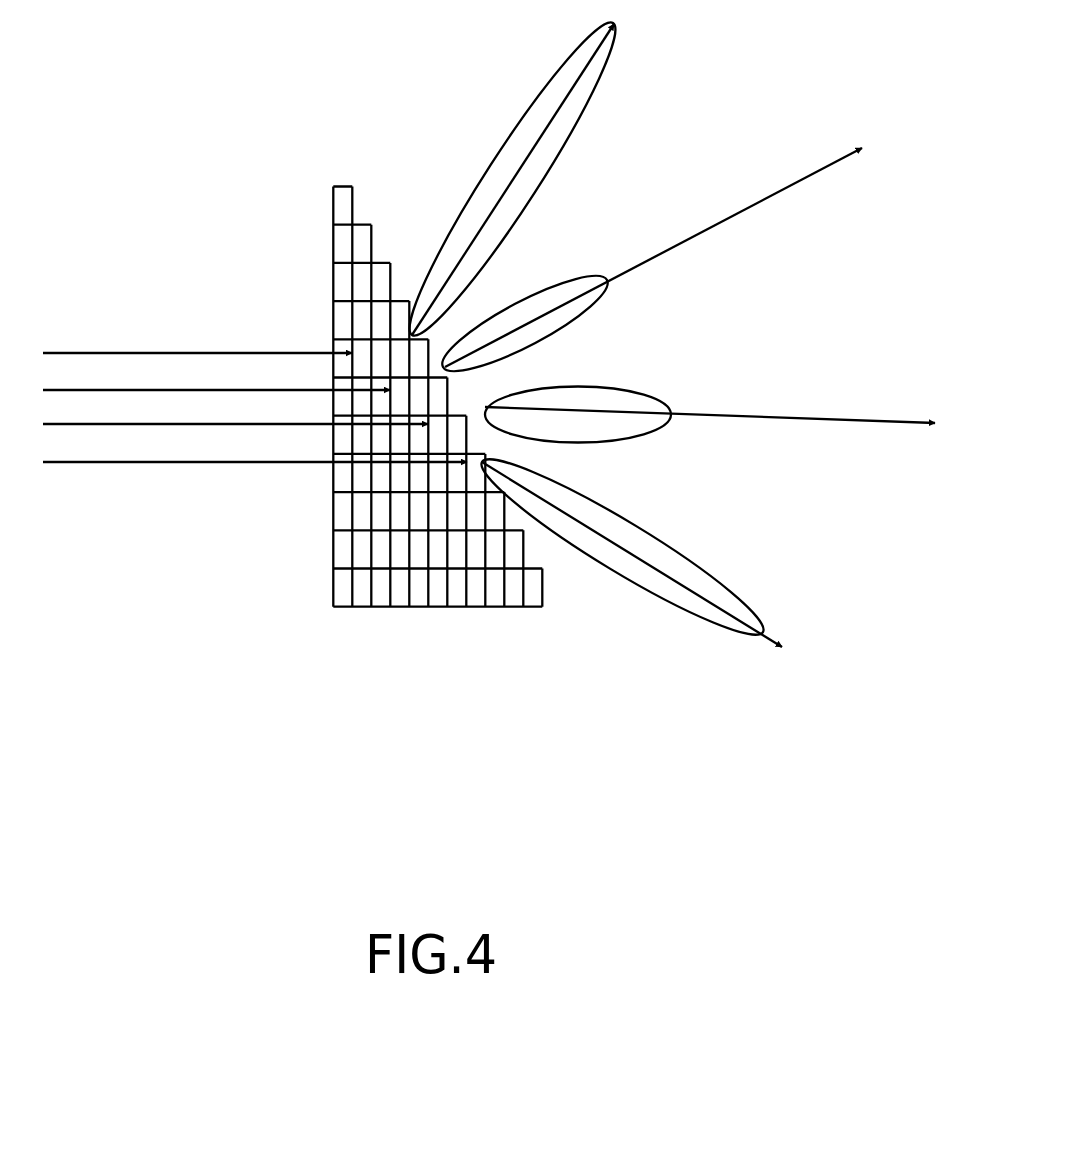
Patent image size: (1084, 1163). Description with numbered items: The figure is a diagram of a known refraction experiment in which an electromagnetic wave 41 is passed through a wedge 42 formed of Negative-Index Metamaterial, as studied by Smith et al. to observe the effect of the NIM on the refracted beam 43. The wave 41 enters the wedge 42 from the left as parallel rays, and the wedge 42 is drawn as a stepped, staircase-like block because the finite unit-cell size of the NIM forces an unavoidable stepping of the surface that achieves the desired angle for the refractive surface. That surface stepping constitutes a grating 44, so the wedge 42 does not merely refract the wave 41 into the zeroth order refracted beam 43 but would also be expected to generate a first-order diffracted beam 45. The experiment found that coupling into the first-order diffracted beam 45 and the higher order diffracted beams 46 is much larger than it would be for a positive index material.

The electromagnetic wave 41 is at (77, 352).
The wedge 42 is at (356, 612).
The refracted beam 43 is at (613, 38).
The grating 44 is at (412, 292).
The first-order diffracted beam 45 is at (765, 630).
The higher order diffracted beams 46 is at (828, 167).